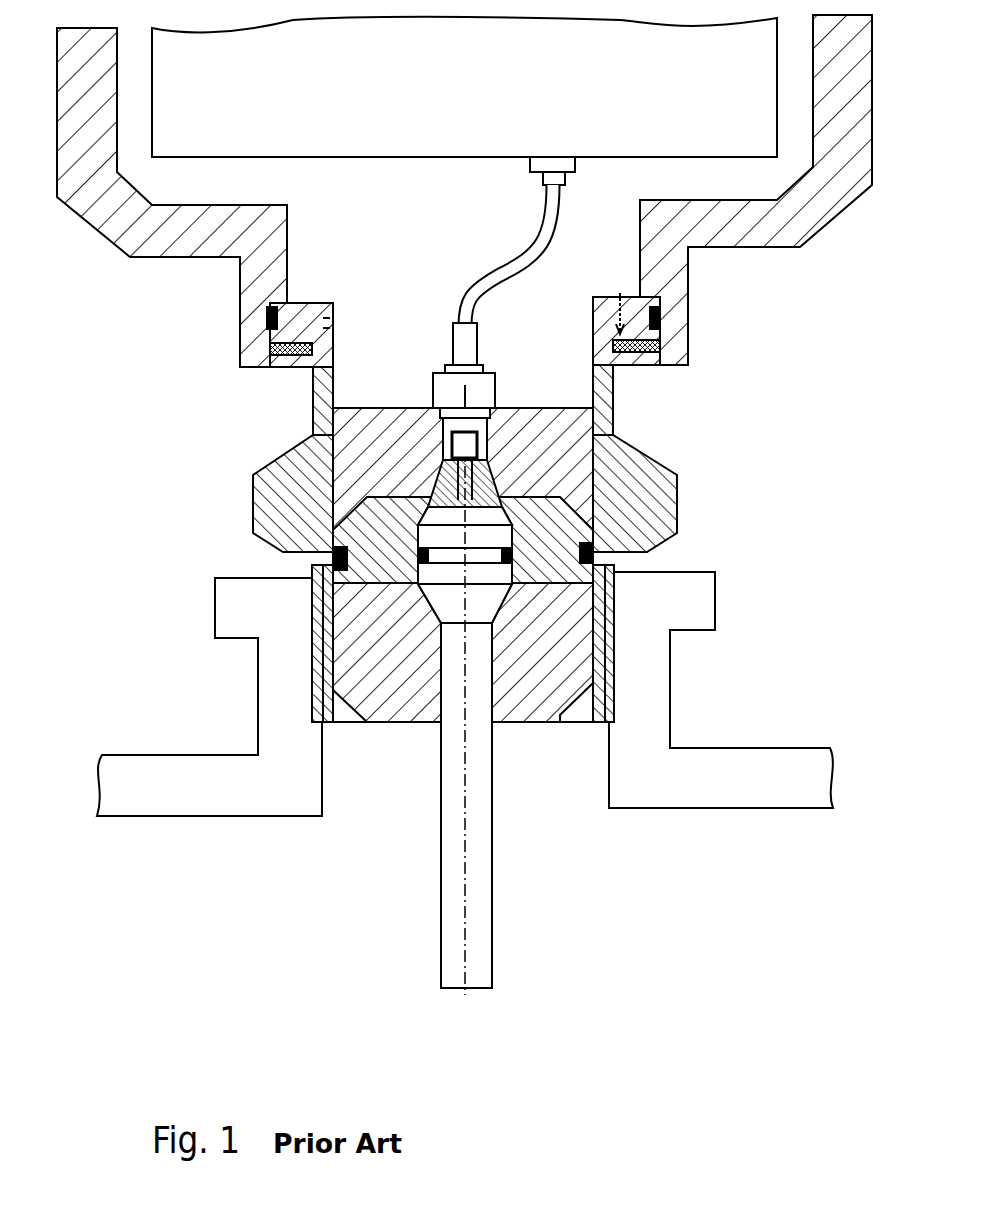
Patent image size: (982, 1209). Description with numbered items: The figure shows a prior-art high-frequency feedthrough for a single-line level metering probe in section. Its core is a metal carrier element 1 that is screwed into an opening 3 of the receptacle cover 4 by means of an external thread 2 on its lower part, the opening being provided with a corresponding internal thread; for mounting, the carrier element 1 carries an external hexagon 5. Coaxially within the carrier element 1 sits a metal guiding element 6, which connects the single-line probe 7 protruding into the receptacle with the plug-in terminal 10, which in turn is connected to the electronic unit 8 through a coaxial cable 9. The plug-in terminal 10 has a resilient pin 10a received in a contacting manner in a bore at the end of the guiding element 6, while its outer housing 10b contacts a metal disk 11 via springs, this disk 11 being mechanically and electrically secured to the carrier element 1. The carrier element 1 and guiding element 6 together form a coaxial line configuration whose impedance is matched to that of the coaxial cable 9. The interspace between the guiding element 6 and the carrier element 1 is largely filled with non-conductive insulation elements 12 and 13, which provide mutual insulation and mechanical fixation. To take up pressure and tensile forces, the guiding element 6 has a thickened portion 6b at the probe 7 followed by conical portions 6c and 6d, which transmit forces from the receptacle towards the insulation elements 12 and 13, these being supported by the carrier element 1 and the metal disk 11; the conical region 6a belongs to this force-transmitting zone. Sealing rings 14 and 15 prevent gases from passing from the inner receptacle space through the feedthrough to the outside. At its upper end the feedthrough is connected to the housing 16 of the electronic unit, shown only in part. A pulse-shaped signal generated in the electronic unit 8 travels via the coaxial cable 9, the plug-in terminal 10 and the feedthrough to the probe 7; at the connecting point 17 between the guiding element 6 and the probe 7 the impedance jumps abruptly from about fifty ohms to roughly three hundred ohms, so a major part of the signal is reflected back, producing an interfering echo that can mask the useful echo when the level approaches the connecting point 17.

The carrier element 1 is at (277, 500).
The external thread 2 is at (313, 647).
The opening 3 is at (400, 785).
The receptacle cover 4 is at (142, 803).
The external hexagon 5 is at (252, 516).
The guiding element 6 is at (482, 667).
The insulating cone 6a is at (493, 487).
The thickened portion 6b is at (513, 537).
The conical portion 6c is at (505, 607).
The conical portion 6d is at (495, 510).
The single-line probe 7 is at (480, 918).
The electronic unit 8 is at (464, 87).
The coaxial cable 9 is at (490, 270).
The plug-in terminal 10 is at (436, 375).
The resilient pin 10a is at (448, 472).
The outer housing 10b is at (443, 435).
The metal disk 11 is at (570, 440).
The insulation element 12 is at (345, 540).
The insulation element 13 is at (385, 690).
The sealing ring 14 is at (505, 549).
The sealing ring 15 is at (592, 565).
The housing 16 is at (240, 287).
The connecting point 17 is at (495, 725).